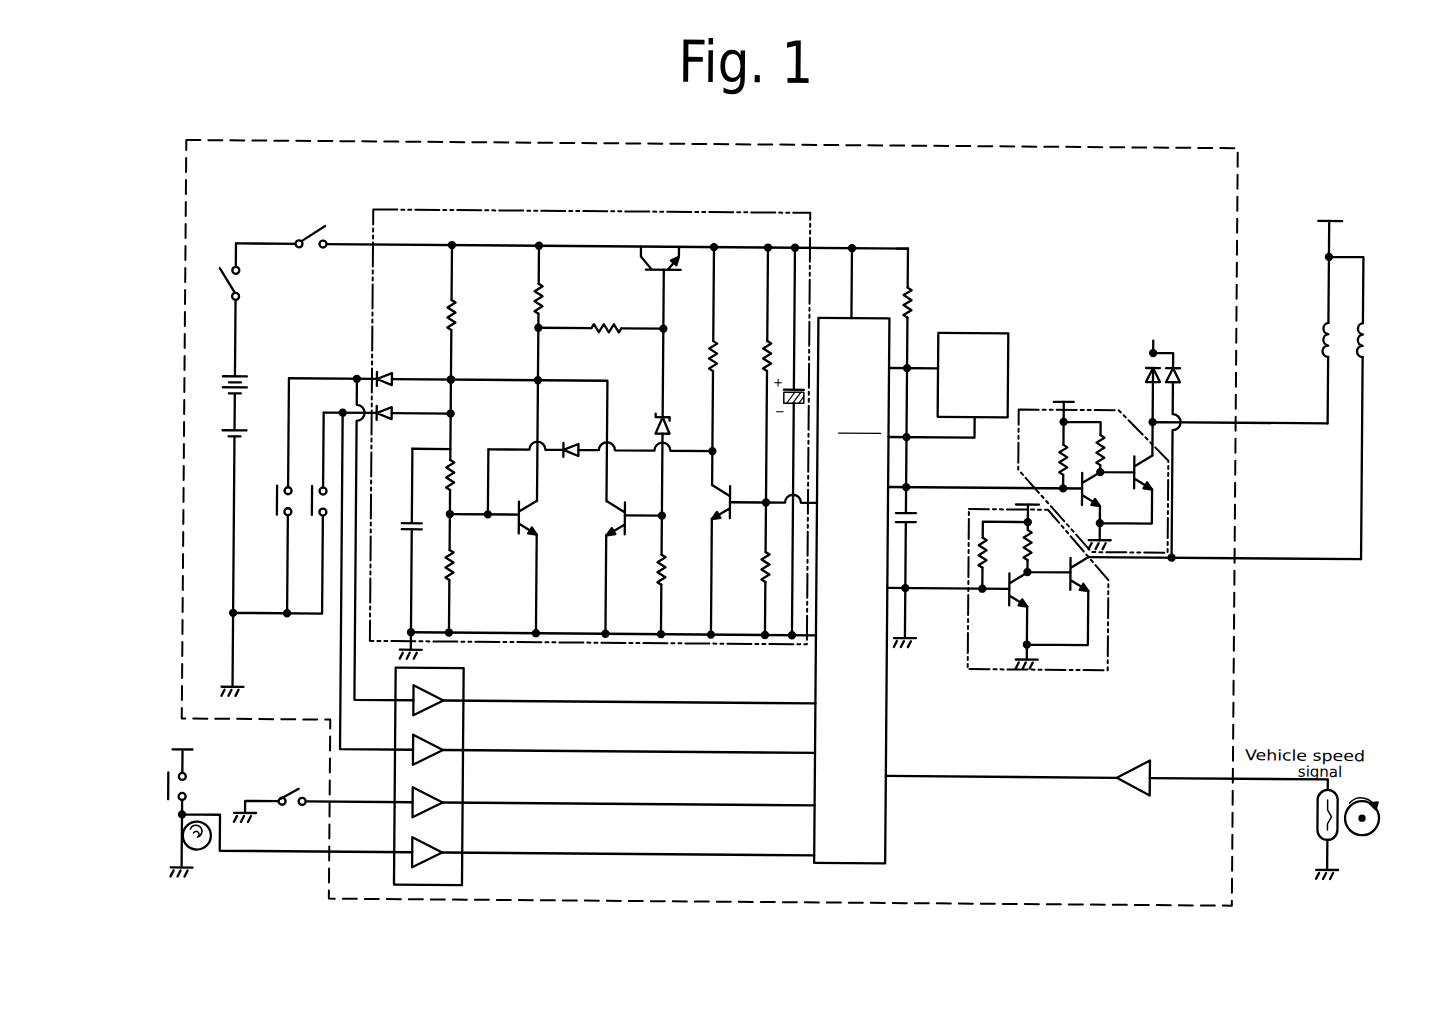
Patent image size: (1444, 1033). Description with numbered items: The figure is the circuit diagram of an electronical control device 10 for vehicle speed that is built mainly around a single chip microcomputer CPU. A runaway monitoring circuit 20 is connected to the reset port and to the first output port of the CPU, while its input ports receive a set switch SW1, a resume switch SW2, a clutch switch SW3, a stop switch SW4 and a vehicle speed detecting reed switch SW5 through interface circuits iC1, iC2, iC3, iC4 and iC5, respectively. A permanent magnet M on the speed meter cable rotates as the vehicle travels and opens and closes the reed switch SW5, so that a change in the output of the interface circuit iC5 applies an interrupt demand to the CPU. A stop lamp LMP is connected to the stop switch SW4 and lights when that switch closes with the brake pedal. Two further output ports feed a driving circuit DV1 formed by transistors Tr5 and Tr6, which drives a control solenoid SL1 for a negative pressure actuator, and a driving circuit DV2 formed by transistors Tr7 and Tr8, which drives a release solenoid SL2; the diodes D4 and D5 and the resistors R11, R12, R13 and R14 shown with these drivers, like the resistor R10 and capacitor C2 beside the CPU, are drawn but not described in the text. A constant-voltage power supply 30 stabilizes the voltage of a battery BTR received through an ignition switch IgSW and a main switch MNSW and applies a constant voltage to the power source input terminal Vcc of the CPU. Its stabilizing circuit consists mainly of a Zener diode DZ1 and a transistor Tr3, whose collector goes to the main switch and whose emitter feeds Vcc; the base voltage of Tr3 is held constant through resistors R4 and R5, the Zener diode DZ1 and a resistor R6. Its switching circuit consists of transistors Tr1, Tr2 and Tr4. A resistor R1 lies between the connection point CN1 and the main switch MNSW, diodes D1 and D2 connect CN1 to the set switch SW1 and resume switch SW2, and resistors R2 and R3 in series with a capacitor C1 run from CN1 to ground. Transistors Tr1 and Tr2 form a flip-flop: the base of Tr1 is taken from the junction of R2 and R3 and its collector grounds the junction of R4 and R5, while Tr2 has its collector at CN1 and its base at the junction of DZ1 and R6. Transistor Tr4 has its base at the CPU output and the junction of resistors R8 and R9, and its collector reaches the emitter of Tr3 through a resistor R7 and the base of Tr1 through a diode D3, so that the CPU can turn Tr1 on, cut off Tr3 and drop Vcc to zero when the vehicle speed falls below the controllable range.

The electronical control device 10 is at (613, 144).
The runaway monitoring circuit 20 is at (1007, 338).
The constant-voltage power supply 30 is at (713, 212).
The main switch MNSW is at (308, 229).
The ignition switch IgSW is at (255, 284).
The battery BTR is at (254, 398).
The set switch SW1 is at (266, 490).
The resume switch SW2 is at (307, 516).
The clutch switch SW3 is at (286, 787).
The stop switch SW4 is at (199, 765).
The vehicle speed detecting reed switch SW5 is at (1318, 814).
The diode D1 is at (389, 368).
The diode D2 is at (387, 425).
The diode D3 is at (573, 439).
The diode D4 is at (1140, 350).
The diode D5 is at (1186, 371).
The Zener diode DZ1 is at (644, 414).
The connection point CN1 is at (467, 390).
The resistor R1 is at (434, 315).
The resistor R2 is at (463, 475).
The resistor R3 is at (462, 565).
The resistor R4 is at (520, 298).
The resistor R5 is at (600, 317).
The resistor R6 is at (673, 570).
The resistor R7 is at (695, 356).
The resistor R8 is at (750, 356).
The resistor R9 is at (747, 568).
The resistor R10 is at (925, 303).
The resistor R11 is at (1000, 553).
The resistor R12 is at (1045, 545).
The resistor R13 is at (1044, 460).
The resistor R14 is at (1116, 450).
The capacitor C1 is at (401, 553).
The capacitor C2 is at (917, 520).
The transistor Tr1 is at (542, 518).
The transistor Tr2 is at (622, 507).
The transistor Tr3 is at (661, 247).
The transistor Tr4 is at (707, 502).
The transistor Tr5 is at (1093, 494).
The transistor Tr6 is at (1156, 466).
The transistor Tr7 is at (1006, 600).
The transistor Tr8 is at (1067, 584).
The single chip microcomputer CPU is at (888, 716).
The power source input terminal Vcc is at (911, 239).
The interface circuit iC1 is at (454, 696).
The interface circuit iC2 is at (454, 746).
The interface circuit iC3 is at (453, 798).
The interface circuit iC4 is at (453, 848).
The interface circuit iC5 is at (1127, 765).
The driving circuit DV1 is at (1168, 515).
The driving circuit DV2 is at (1109, 640).
The control solenoid SL1 is at (1311, 279).
The release solenoid SL2 is at (1382, 340).
The stop lamp LMP is at (208, 853).
The permanent magnet M is at (1382, 820).